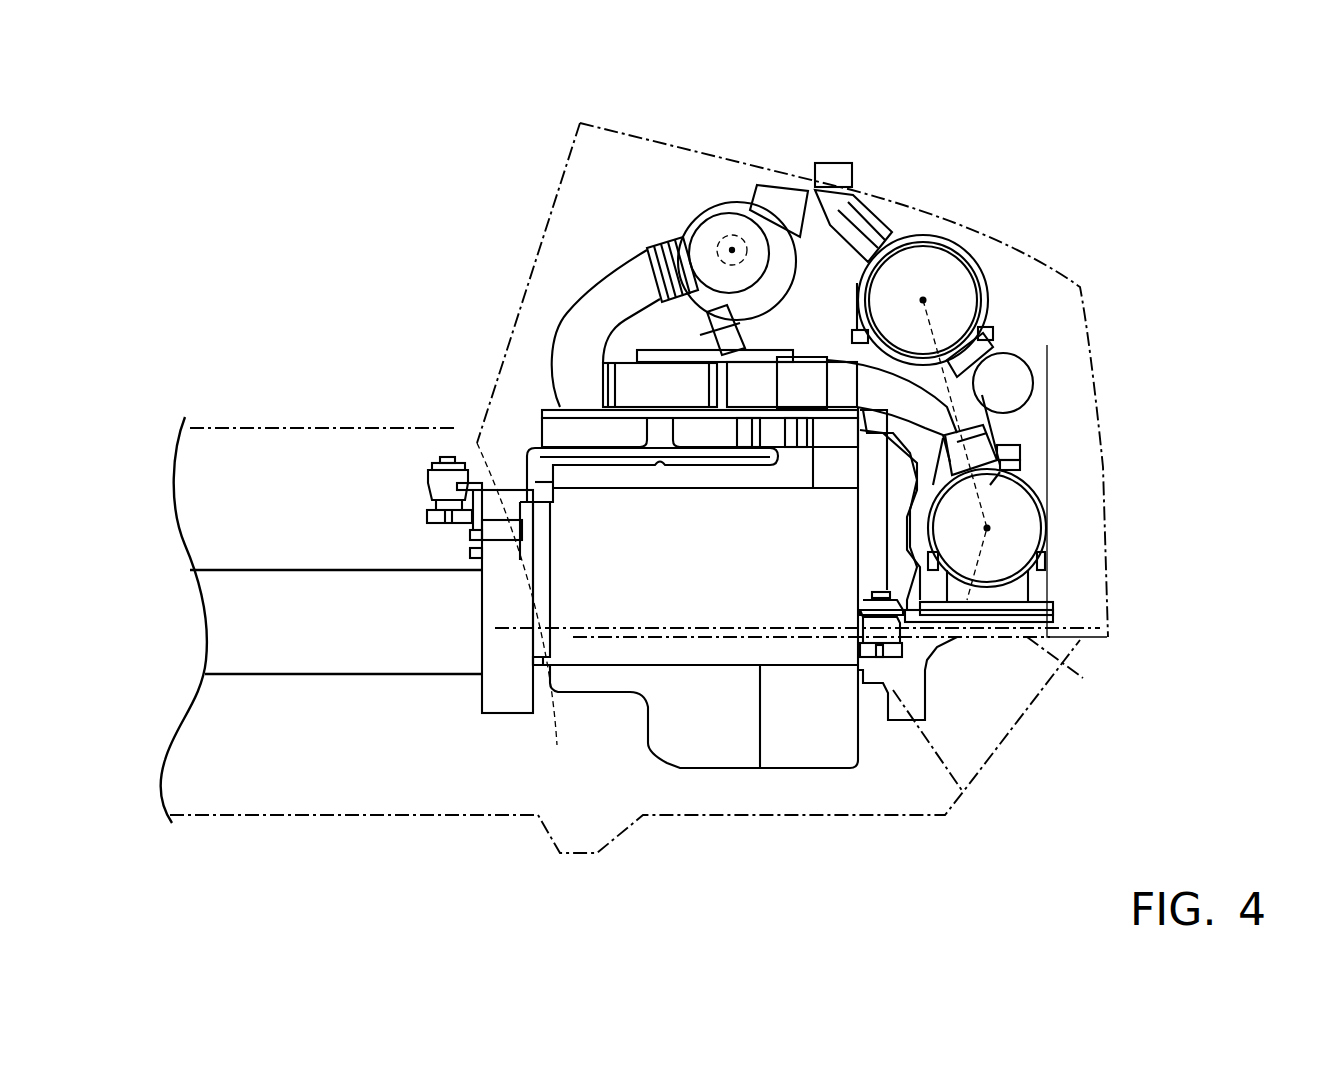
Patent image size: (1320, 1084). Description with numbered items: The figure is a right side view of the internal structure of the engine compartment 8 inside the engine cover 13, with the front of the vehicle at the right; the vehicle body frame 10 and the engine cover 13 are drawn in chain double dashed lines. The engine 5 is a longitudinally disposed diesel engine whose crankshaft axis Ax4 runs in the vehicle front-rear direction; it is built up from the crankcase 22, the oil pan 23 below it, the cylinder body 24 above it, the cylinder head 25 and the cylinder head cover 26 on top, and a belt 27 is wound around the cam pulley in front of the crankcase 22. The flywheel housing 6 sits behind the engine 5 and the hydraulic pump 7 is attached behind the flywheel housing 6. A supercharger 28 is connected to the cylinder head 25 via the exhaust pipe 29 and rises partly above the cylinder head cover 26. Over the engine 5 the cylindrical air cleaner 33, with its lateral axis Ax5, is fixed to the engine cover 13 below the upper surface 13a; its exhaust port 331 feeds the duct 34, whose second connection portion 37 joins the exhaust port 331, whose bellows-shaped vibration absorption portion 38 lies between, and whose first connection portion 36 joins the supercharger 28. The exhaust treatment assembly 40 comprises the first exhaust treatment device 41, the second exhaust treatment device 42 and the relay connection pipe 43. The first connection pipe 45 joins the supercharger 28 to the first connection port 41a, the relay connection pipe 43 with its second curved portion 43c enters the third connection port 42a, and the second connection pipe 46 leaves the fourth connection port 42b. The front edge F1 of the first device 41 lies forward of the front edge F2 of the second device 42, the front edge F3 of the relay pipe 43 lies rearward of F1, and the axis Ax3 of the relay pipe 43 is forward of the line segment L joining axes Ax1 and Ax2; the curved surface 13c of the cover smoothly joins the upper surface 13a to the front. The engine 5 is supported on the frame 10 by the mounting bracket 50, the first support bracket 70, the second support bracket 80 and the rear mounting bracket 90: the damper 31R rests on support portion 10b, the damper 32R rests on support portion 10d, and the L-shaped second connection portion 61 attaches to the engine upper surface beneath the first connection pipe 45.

The engine 5 is at (548, 400).
The flywheel housing 6 is at (502, 700).
The hydraulic pump 7 is at (255, 585).
The engine compartment 8 is at (640, 187).
The vehicle body frame 10 is at (232, 428).
The mounting bracket support portion 10b is at (947, 815).
The mounting bracket support portion 10d is at (430, 525).
The engine cover 13 is at (937, 200).
The upper surface 13a is at (913, 197).
The curved surface 13c is at (1045, 280).
The crankcase 22 is at (817, 657).
The oil pan 23 is at (750, 745).
The cylinder body 24 is at (697, 590).
The cylinder head 25 is at (547, 433).
The cylinder head cover 26 is at (553, 400).
The belt 27 is at (873, 537).
The supercharger 28 is at (657, 377).
The exhaust pipe 29 is at (530, 470).
The damper 31R is at (905, 645).
The damper 32R is at (428, 476).
The air cleaner 33 is at (733, 235).
The exhaust port 331 is at (768, 220).
The duct 34 is at (620, 247).
The first connection portion 36 is at (602, 372).
The second connection portion 37 is at (732, 235).
The vibration absorption portion 38 is at (667, 263).
The exhaust treatment assembly 40 is at (990, 253).
The first exhaust treatment device 41 is at (1053, 610).
The first connection port 41a is at (1045, 515).
The second exhaust treatment device 42 is at (937, 253).
The third connection port 42a is at (997, 340).
The fourth connection port 42b is at (880, 240).
The relay connection pipe 43 is at (1000, 427).
The second curved portion 43c is at (1010, 368).
The first connection pipe 45 is at (1015, 470).
The second connection pipe 46 is at (833, 197).
The mounting bracket 50 is at (910, 617).
The second connection portion 61 is at (793, 590).
The first support bracket 70 is at (890, 615).
The second support bracket 80 is at (973, 337).
The rear mounting bracket 90 is at (477, 473).
The central axial line Ax1 is at (1000, 545).
The central axial line Ax2 is at (923, 300).
The central axial line Ax3 is at (1003, 383).
The central axial line Ax4 is at (530, 608).
The central axial line Ax5 is at (727, 227).
The front edge F1 is at (1020, 527).
The front edge F2 is at (1000, 290).
The front edge F3 is at (1020, 395).
The line segment L is at (1066, 665).